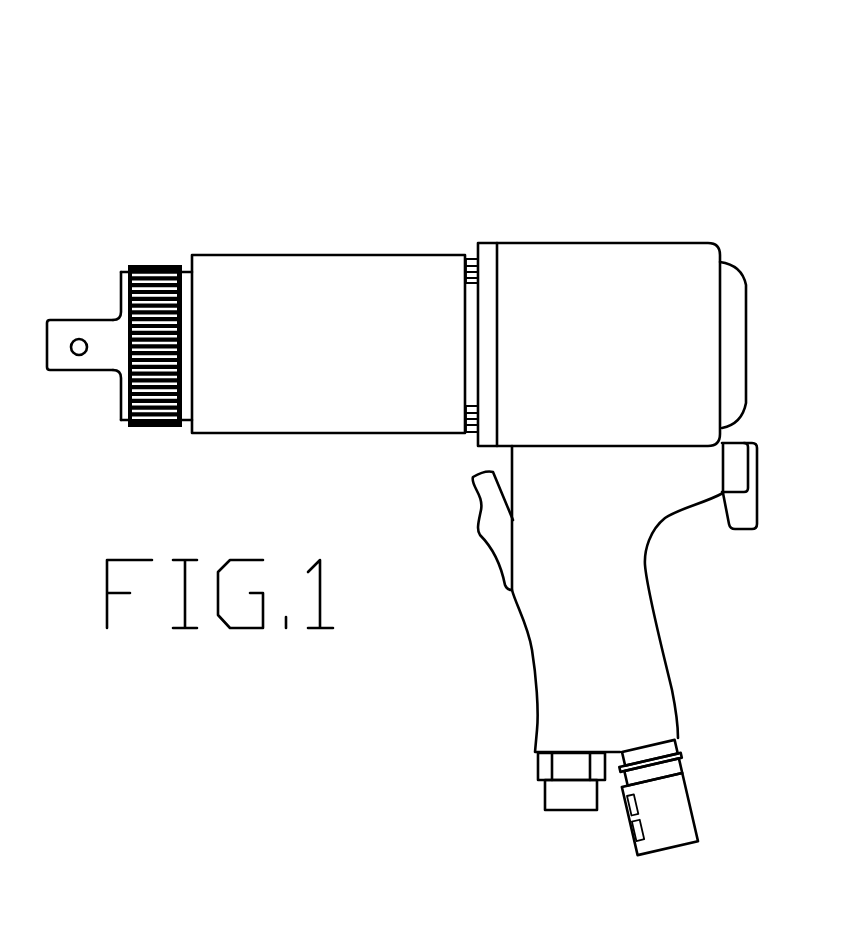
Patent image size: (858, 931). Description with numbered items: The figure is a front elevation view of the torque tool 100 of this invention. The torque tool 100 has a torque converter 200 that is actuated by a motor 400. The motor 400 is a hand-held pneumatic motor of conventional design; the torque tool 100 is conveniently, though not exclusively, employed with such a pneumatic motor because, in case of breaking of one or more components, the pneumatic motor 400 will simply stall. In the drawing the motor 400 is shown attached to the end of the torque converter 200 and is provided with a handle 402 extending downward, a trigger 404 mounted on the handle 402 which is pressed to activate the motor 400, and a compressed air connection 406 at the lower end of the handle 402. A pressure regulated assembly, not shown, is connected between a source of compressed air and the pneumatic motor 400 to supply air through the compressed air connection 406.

The torque tool 100 is at (330, 157).
The torque converter 200 is at (355, 258).
The motor 400 is at (638, 277).
The handle 402 is at (672, 648).
The trigger 404 is at (498, 525).
The compressed air connection 406 is at (568, 793).